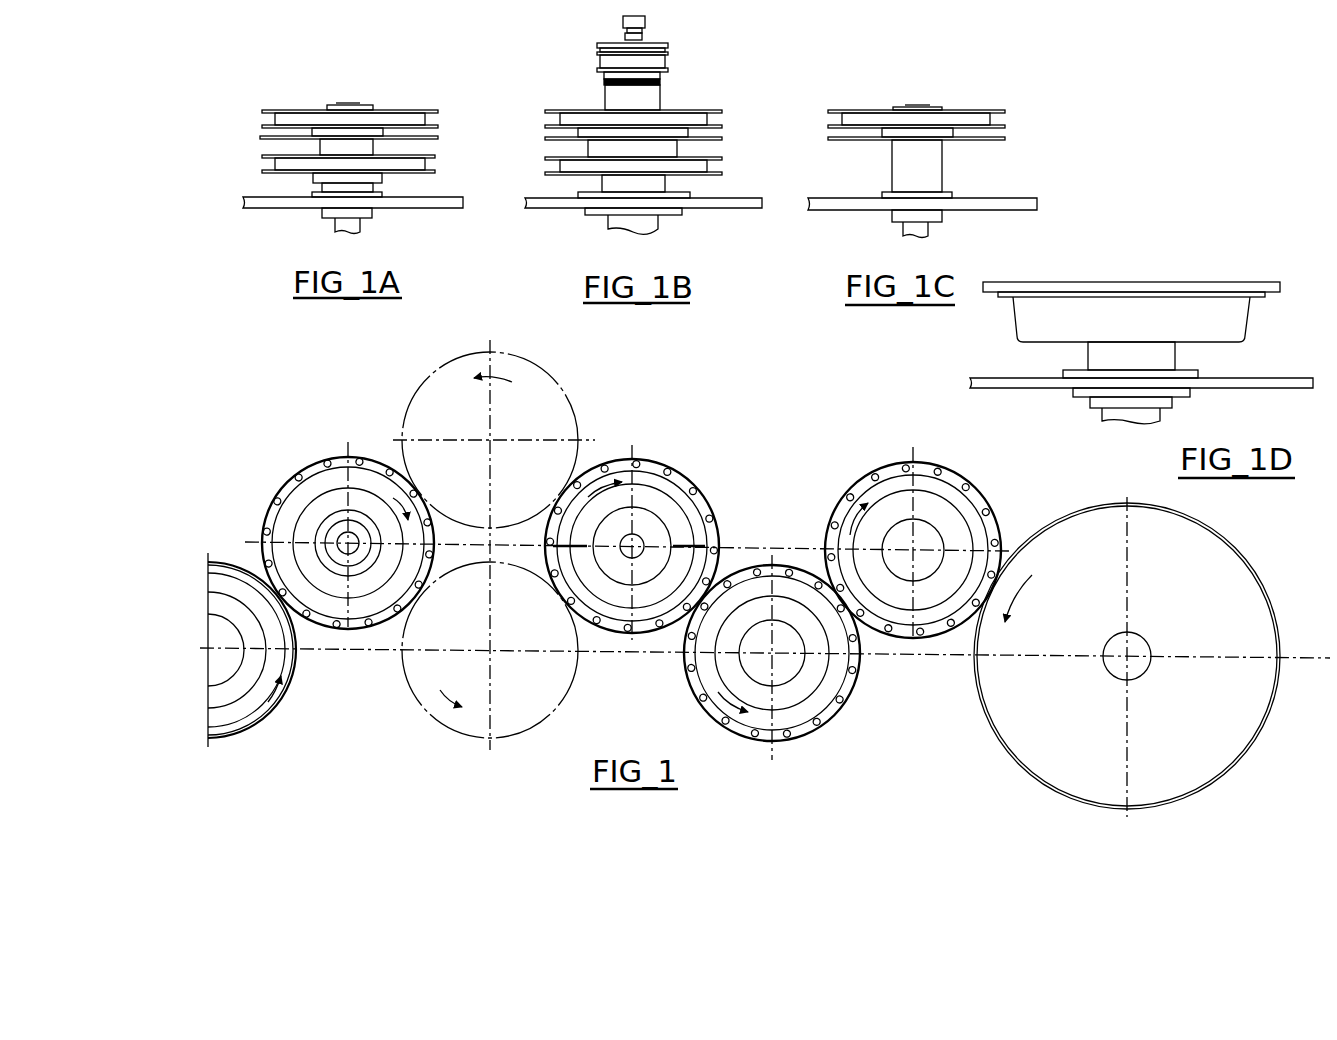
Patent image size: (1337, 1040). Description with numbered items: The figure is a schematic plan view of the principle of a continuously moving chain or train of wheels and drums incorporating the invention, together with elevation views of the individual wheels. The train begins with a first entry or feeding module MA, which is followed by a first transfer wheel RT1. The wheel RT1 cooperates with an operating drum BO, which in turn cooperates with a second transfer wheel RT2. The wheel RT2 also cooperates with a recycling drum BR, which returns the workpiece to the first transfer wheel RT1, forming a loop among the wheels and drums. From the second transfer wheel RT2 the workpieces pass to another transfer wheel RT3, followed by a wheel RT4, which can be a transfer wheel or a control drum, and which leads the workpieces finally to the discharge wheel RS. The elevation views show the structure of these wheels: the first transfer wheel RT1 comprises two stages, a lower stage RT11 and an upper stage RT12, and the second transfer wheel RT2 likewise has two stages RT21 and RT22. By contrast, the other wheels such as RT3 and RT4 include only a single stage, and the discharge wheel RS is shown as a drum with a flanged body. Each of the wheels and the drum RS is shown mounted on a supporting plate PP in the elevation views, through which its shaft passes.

In FIG. 1A, the first transfer wheel RT1 is at (315, 119).
In FIG. 1, the first transfer wheel RT1 is at (280, 487).
In FIG. 1A, the lower stage RT11 is at (290, 173).
In FIG. 1A, the upper stage RT12 is at (275, 117).
In FIG. 1B, the second transfer wheel RT2 is at (620, 141).
In FIG. 1, the second transfer wheel RT2 is at (643, 460).
In FIG. 1B, the stage of second transfer wheel RT21 is at (600, 165).
In FIG. 1B, the stage of second transfer wheel RT22 is at (585, 133).
In FIG. 1, the transfer wheel RT3 is at (745, 735).
In FIG. 1C, the wheel RT4 is at (886, 118).
In FIG. 1, the wheel RT4 is at (880, 468).
In FIG. 1D, the discharge wheel RS is at (1167, 290).
In FIG. 1, the discharge wheel RS is at (1253, 738).
In FIG. 1A, the support plate PP is at (265, 202).
In FIG. 1B, the support plate PP is at (718, 205).
In FIG. 1C, the support plate PP is at (843, 205).
In FIG. 1D, the support plate PP is at (1028, 385).
In FIG. 1, the feeding module MA is at (245, 728).
In FIG. 1, the recycling drum BR is at (417, 393).
In FIG. 1, the operating drum BO is at (520, 740).